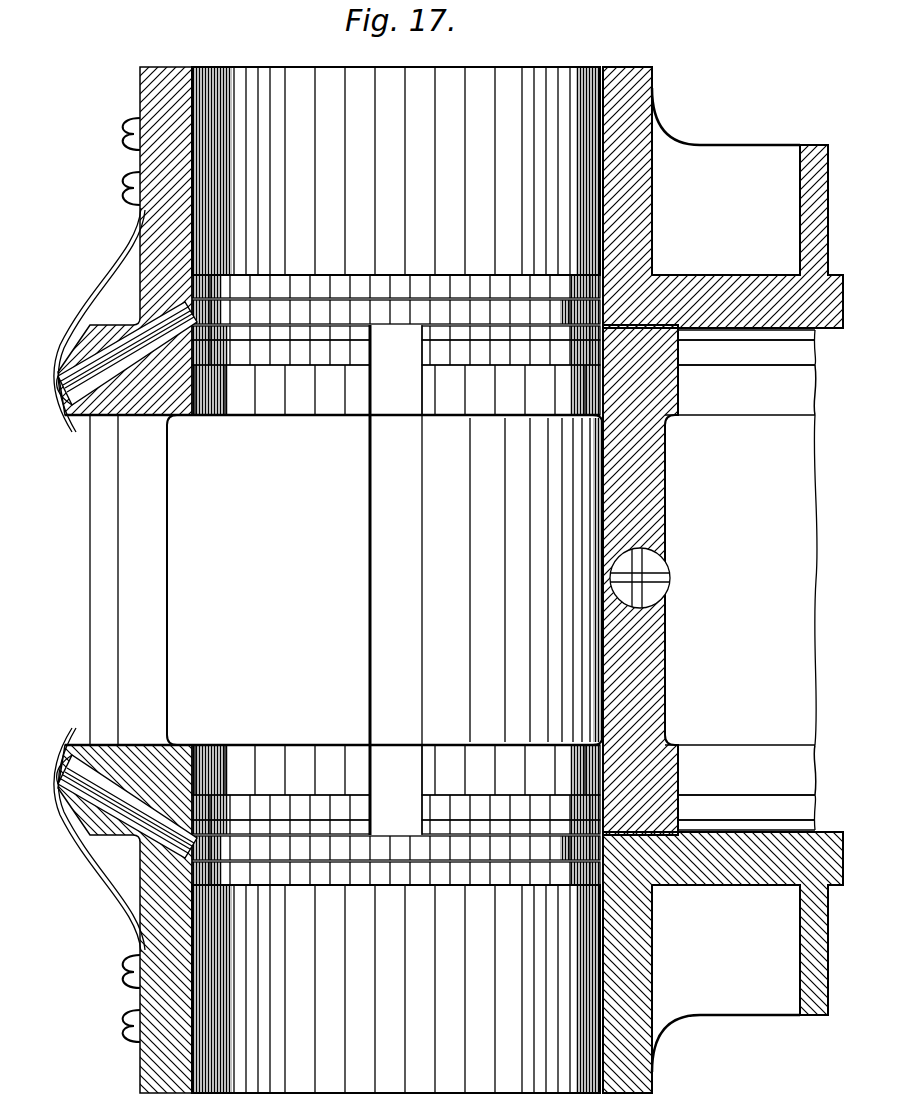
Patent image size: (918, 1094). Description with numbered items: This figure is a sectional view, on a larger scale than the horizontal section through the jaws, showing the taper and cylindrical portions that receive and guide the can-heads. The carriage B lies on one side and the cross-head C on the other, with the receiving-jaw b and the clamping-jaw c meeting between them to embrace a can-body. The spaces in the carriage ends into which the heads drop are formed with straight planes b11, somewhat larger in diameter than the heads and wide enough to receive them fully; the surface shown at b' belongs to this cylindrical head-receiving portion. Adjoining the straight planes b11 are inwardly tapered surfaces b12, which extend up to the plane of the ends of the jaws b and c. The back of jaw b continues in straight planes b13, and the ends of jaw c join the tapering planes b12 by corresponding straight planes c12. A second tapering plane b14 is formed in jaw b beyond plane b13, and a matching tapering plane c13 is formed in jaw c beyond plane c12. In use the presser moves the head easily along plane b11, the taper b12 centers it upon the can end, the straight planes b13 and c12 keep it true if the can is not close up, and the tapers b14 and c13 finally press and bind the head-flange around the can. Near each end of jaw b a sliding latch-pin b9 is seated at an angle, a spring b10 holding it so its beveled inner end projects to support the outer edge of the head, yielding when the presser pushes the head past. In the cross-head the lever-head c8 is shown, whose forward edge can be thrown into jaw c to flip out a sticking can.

The piston cylinder b' is at (396, 580).
The receiving-jaw b is at (332, 580).
The sliding latch-pin b9 is at (82, 752).
The spring b10 is at (93, 860).
The straight plane b11 is at (396, 580).
The tapering plane b12 is at (396, 580).
The straight plane b13 is at (281, 579).
The second tapering plane b14 is at (281, 580).
The clamping-jaw c is at (619, 580).
The lever-head c8 is at (665, 578).
The straight plane c12 is at (618, 579).
The tapering plane c13 is at (619, 580).
The chamber B is at (230, 580).
The cross-head C is at (632, 580).